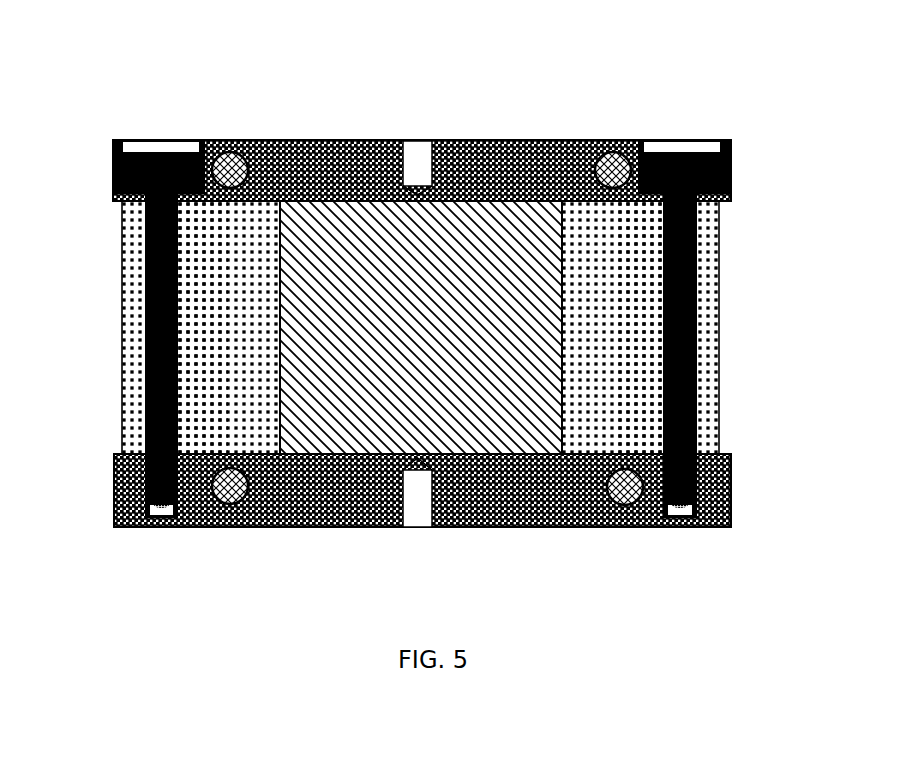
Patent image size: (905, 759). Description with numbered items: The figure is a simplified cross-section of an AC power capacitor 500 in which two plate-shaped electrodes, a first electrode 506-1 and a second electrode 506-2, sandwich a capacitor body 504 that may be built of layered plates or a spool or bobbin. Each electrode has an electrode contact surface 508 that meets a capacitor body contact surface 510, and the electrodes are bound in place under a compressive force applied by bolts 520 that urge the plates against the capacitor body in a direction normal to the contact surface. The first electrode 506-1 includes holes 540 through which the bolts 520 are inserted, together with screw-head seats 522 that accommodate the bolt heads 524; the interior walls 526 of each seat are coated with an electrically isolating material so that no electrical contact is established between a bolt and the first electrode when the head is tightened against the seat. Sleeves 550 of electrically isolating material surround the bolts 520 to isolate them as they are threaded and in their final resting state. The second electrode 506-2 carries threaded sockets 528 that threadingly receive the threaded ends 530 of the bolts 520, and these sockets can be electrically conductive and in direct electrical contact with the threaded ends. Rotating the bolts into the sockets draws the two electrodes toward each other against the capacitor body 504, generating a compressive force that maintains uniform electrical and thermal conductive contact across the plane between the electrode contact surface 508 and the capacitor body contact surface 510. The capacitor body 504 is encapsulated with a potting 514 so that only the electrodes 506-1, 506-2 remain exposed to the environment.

The AC power capacitor 500 is at (373, 41).
The capacitor body 504 is at (380, 232).
The first electrode 506-1 is at (502, 157).
The second electrode 506-2 is at (267, 493).
The electrode contact surface 508 is at (215, 207).
The capacitor body contact surface 510 is at (538, 181).
The potting 514 is at (145, 353).
The bolt 520 is at (427, 403).
The screw-head seat 522 is at (427, 333).
The bolt head 524 is at (140, 162).
The interior wall of seat 526 is at (200, 147).
The threaded socket 528 is at (178, 510).
The threaded end of bolt 530 is at (150, 505).
The hole 540 is at (145, 222).
The sleeve 550 is at (122, 315).